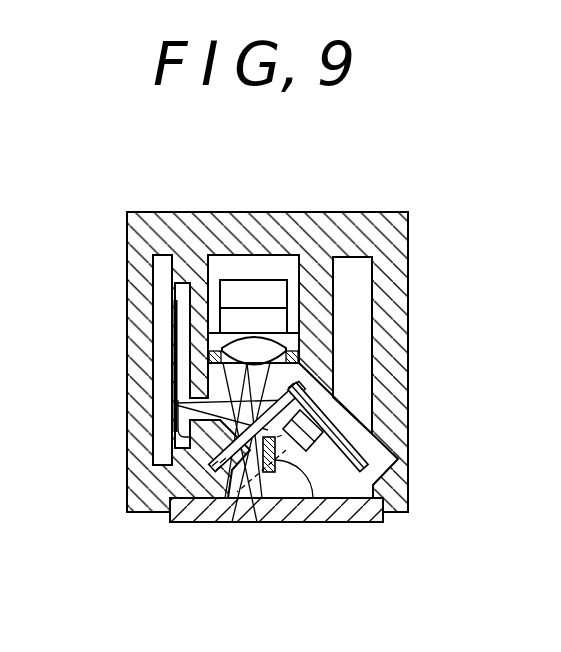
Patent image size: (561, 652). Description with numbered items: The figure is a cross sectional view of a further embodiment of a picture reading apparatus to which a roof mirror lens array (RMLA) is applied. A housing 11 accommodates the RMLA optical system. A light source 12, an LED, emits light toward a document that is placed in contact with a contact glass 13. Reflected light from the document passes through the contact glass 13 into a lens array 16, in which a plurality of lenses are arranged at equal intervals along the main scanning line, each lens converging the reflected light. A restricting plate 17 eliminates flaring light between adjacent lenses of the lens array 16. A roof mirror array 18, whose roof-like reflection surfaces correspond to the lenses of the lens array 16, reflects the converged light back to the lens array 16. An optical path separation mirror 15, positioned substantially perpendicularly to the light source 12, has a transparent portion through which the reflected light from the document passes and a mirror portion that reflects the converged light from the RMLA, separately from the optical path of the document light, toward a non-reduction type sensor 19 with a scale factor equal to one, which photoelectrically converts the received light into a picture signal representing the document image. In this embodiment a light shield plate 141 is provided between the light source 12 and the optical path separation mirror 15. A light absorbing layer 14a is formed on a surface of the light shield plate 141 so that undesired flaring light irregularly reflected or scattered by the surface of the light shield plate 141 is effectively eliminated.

The housing 11 is at (400, 371).
The light source 12 is at (365, 472).
The contact glass 13 is at (373, 523).
The light absorbing layer 14a is at (312, 522).
The light shield plate 141 is at (265, 500).
The optical path separation mirror 15 is at (310, 408).
The lens array 16 is at (292, 352).
The restricting plate 17 is at (292, 322).
The roof mirror array 18 is at (262, 268).
The non-reduction type sensor 19 is at (163, 308).